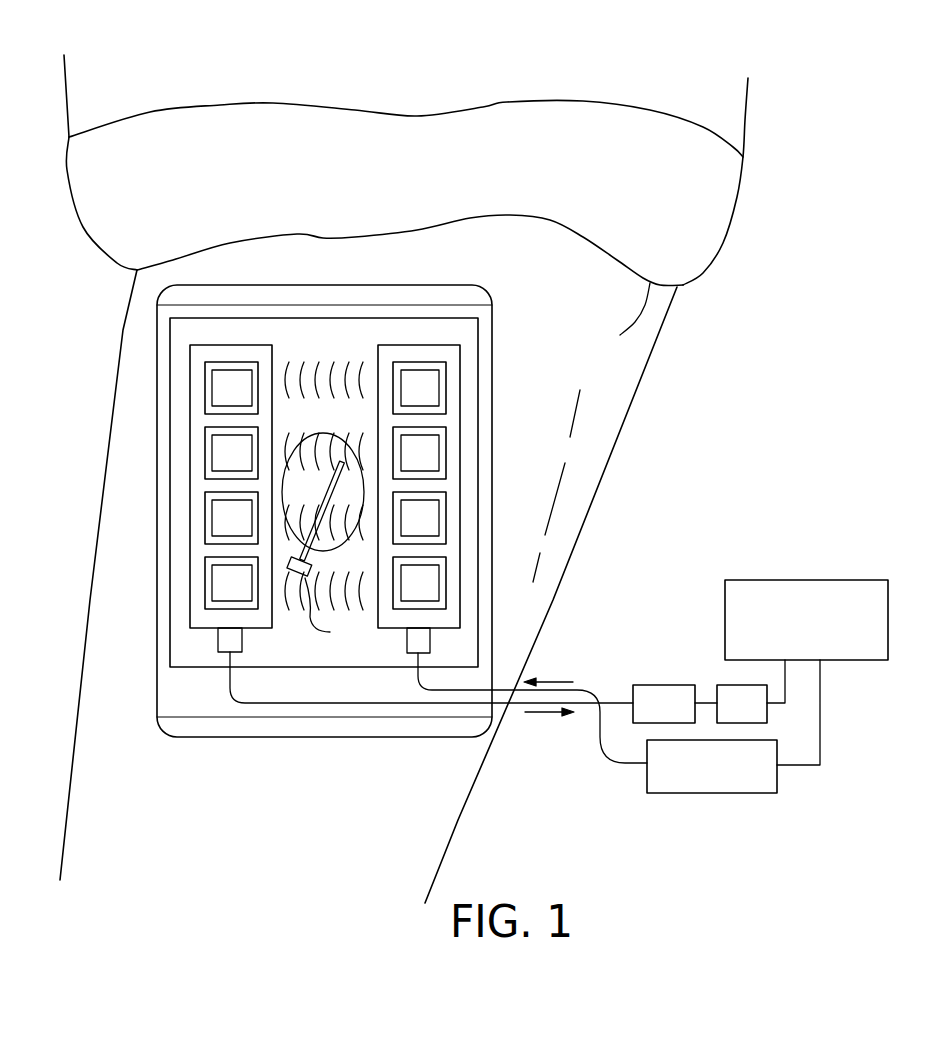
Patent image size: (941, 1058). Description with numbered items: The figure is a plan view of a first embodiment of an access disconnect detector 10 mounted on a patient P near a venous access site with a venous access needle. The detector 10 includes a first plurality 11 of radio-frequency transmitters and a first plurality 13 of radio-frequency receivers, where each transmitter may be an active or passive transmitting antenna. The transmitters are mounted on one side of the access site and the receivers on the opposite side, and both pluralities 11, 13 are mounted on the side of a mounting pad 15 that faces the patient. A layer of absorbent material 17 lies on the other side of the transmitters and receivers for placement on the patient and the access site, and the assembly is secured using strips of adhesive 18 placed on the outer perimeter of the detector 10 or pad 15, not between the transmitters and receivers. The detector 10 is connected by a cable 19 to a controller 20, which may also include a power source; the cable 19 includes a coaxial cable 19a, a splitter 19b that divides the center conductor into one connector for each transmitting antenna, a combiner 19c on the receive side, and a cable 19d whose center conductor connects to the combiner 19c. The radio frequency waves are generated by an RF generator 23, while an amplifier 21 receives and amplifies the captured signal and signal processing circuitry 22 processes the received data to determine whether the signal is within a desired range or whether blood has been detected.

The patient P is at (633, 410).
The access disconnect detector 10 is at (550, 369).
The first plurality of radio-frequency transmitters 11 is at (412, 207).
The first plurality of radio-frequency receivers 13 is at (234, 222).
The mounting pad 15 is at (492, 472).
The layer of absorbent material 17 is at (478, 587).
The strips of adhesive 18 is at (465, 292).
The cable 19 is at (438, 712).
The coaxial cable 19a is at (600, 737).
The splitter 19b is at (430, 645).
The combiner 19c is at (218, 642).
The cable 19d is at (618, 703).
The controller 20 is at (783, 580).
The amplifier 21 is at (665, 685).
The signal processing circuitry 22 is at (728, 685).
The RF generator 23 is at (705, 793).